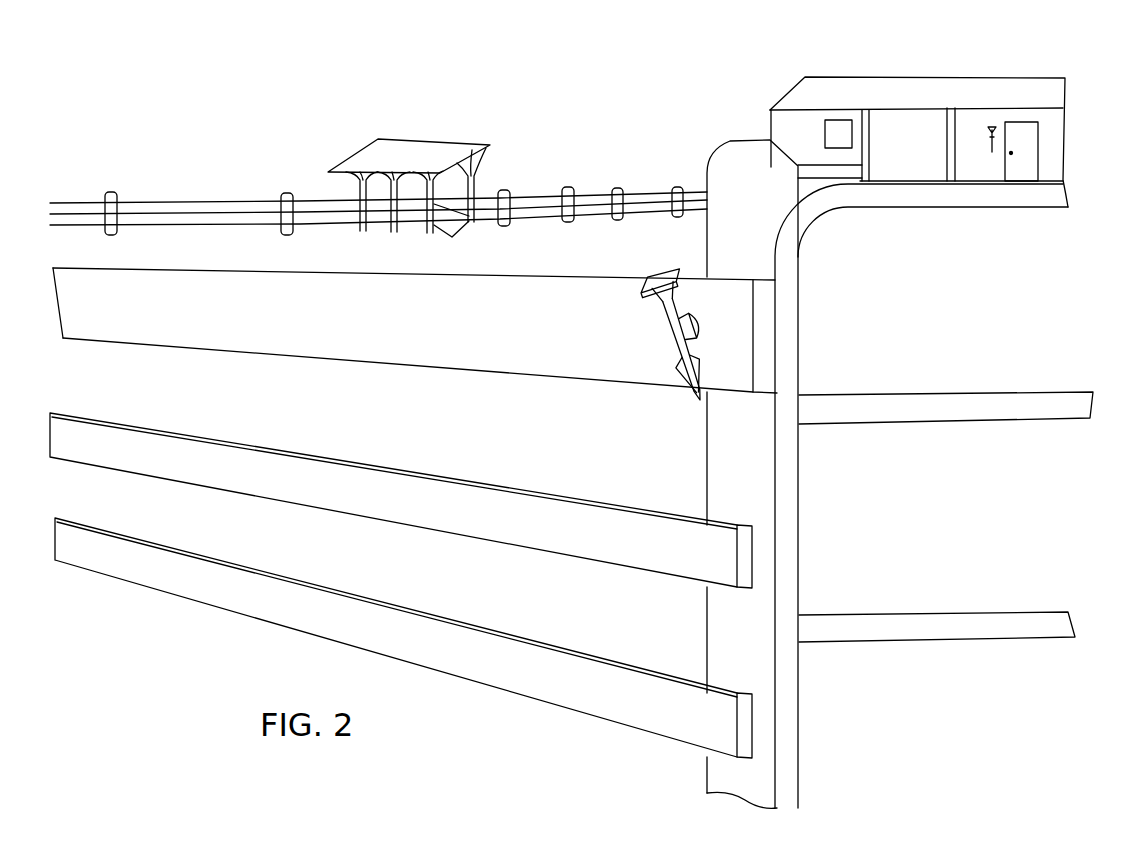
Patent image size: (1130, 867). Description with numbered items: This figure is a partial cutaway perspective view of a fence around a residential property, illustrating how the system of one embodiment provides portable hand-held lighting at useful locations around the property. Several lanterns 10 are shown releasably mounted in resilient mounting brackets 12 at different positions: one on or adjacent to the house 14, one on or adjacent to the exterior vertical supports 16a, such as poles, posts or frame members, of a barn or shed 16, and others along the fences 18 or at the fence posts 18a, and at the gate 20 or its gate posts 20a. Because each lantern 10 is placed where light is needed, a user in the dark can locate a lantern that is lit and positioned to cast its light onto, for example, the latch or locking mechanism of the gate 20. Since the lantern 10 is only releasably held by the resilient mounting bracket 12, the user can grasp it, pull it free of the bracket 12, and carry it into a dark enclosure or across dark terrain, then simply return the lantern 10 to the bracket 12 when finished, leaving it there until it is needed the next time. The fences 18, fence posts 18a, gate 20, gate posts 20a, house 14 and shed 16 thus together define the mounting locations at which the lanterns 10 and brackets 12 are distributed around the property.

The lantern 10 is at (489, 177).
The mounting bracket 12 is at (686, 306).
The house 14 is at (932, 60).
The barn or shed 16 is at (415, 127).
The exterior vertical supports 16a is at (434, 214).
The fences 18 is at (593, 195).
The fence posts 18a is at (568, 189).
The gate 20 is at (910, 210).
The gate posts 20a is at (729, 164).